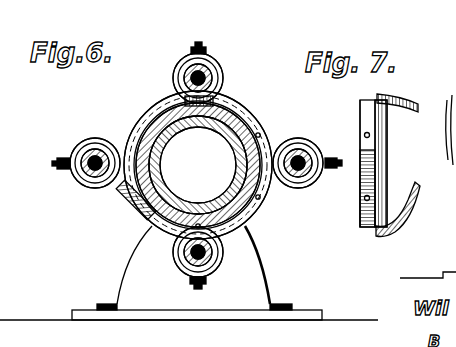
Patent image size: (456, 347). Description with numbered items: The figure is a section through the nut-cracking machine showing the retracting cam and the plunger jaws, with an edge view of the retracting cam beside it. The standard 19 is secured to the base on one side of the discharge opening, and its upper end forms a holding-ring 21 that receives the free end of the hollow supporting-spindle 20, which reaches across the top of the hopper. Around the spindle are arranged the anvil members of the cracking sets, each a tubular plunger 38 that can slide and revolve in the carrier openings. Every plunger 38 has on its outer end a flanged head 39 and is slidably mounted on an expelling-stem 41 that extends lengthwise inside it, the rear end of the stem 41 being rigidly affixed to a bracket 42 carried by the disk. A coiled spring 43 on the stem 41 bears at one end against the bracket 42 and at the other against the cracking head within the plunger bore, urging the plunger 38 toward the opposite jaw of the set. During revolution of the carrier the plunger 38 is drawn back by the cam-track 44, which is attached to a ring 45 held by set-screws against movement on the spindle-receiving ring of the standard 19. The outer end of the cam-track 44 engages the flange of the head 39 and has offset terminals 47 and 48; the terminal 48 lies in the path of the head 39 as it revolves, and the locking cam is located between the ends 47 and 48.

In FIG. 6, the supporting-standard 19 is at (268, 302).
In FIG. 6, the supporting-spindle 20 is at (191, 132).
In FIG. 6, the holding-ring 21 is at (243, 226).
In FIG. 6, the tubular plunger 38 is at (222, 89).
In FIG. 6, the flanged head 39 is at (220, 70).
In FIG. 6, the expelling-stem 41 is at (186, 77).
In FIG. 6, the bracket 42 is at (200, 46).
In FIG. 6, the coiled spring 43 is at (215, 78).
In FIG. 6, the cam-track 44 is at (268, 130).
In FIG. 7, the cam-track 44 is at (384, 145).
In FIG. 6, the ring 45 is at (146, 120).
In FIG. 7, the ring 45 is at (378, 156).
In FIG. 6, the offset terminal 47 is at (186, 99).
In FIG. 7, the offset terminal 47 is at (404, 101).
In FIG. 6, the offset terminal 48 is at (122, 205).
In FIG. 7, the offset terminal 48 is at (417, 202).